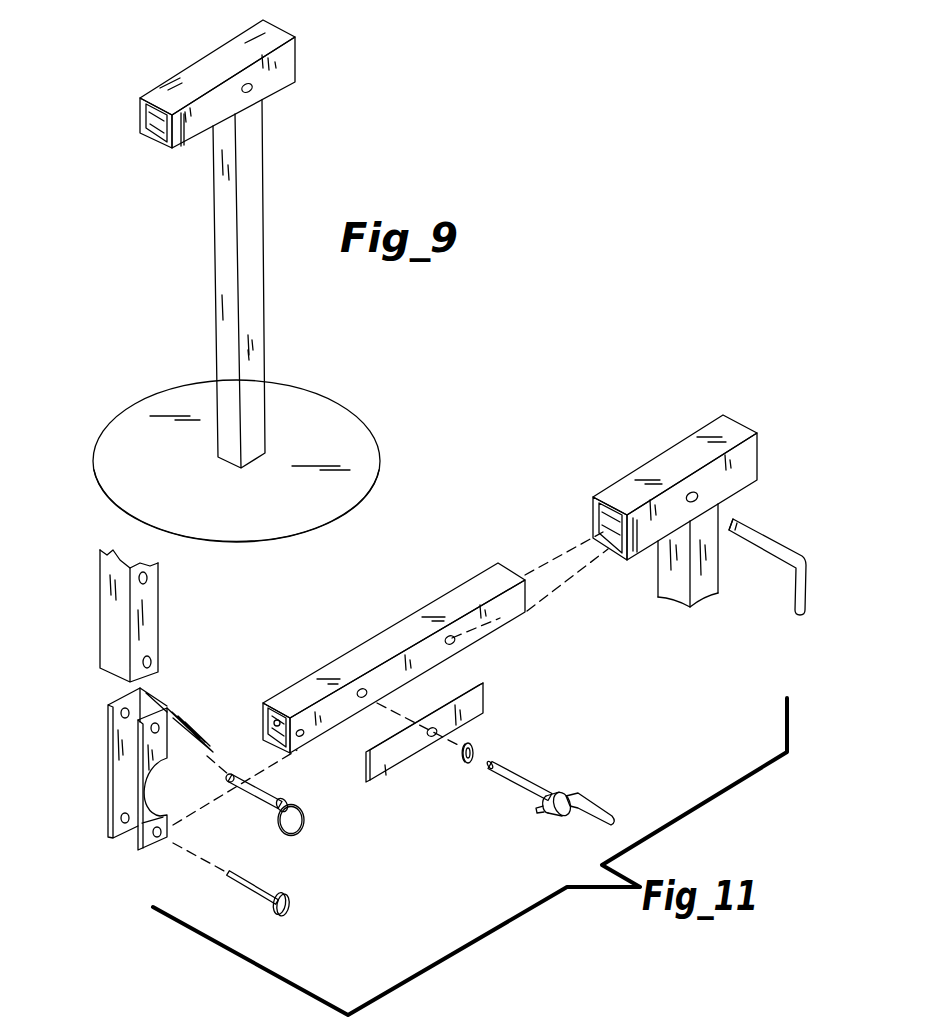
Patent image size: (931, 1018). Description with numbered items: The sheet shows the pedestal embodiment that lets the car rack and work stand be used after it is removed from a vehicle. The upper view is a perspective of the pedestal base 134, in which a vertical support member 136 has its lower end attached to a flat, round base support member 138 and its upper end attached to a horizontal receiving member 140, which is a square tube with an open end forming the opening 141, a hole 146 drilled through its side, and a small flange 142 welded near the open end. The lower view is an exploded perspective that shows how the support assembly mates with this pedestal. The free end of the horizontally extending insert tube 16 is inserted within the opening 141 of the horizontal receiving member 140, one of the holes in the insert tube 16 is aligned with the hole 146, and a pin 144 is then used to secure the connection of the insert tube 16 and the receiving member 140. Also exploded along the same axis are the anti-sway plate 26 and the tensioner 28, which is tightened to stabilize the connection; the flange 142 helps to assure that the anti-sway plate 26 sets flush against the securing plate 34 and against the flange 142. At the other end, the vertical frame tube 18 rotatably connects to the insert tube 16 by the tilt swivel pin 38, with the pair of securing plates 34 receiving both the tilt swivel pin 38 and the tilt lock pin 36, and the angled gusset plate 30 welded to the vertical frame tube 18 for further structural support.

In FIG. 11, the insert tube 16 is at (503, 625).
In FIG. 11, the vertical frame tube 18 is at (108, 628).
In FIG. 11, the anti-sway plate 26 is at (482, 705).
In FIG. 11, the tensioner 28 is at (572, 797).
In FIG. 11, the angled gusset plate 30 is at (186, 715).
In FIG. 11, the securing plates 34 is at (134, 779).
In FIG. 11, the tilt lock pin 36 is at (298, 803).
In FIG. 11, the tilt swivel pin 38 is at (287, 898).
In FIG. 9, the base 134 is at (302, 187).
In FIG. 9, the vertical support member 136 is at (257, 325).
In FIG. 11, the vertical support member 136 is at (680, 595).
In FIG. 9, the base support member 138 is at (348, 402).
In FIG. 9, the horizontal receiving member 140 is at (221, 101).
In FIG. 11, the horizontal receiving member 140 is at (661, 506).
In FIG. 9, the opening 141 is at (148, 117).
In FIG. 11, the opening 141 is at (603, 517).
In FIG. 9, the flange 142 is at (182, 134).
In FIG. 11, the flange 142 is at (637, 557).
In FIG. 11, the pin 144 is at (793, 578).
In FIG. 9, the hole 146 is at (252, 90).
In FIG. 11, the hole 146 is at (698, 490).